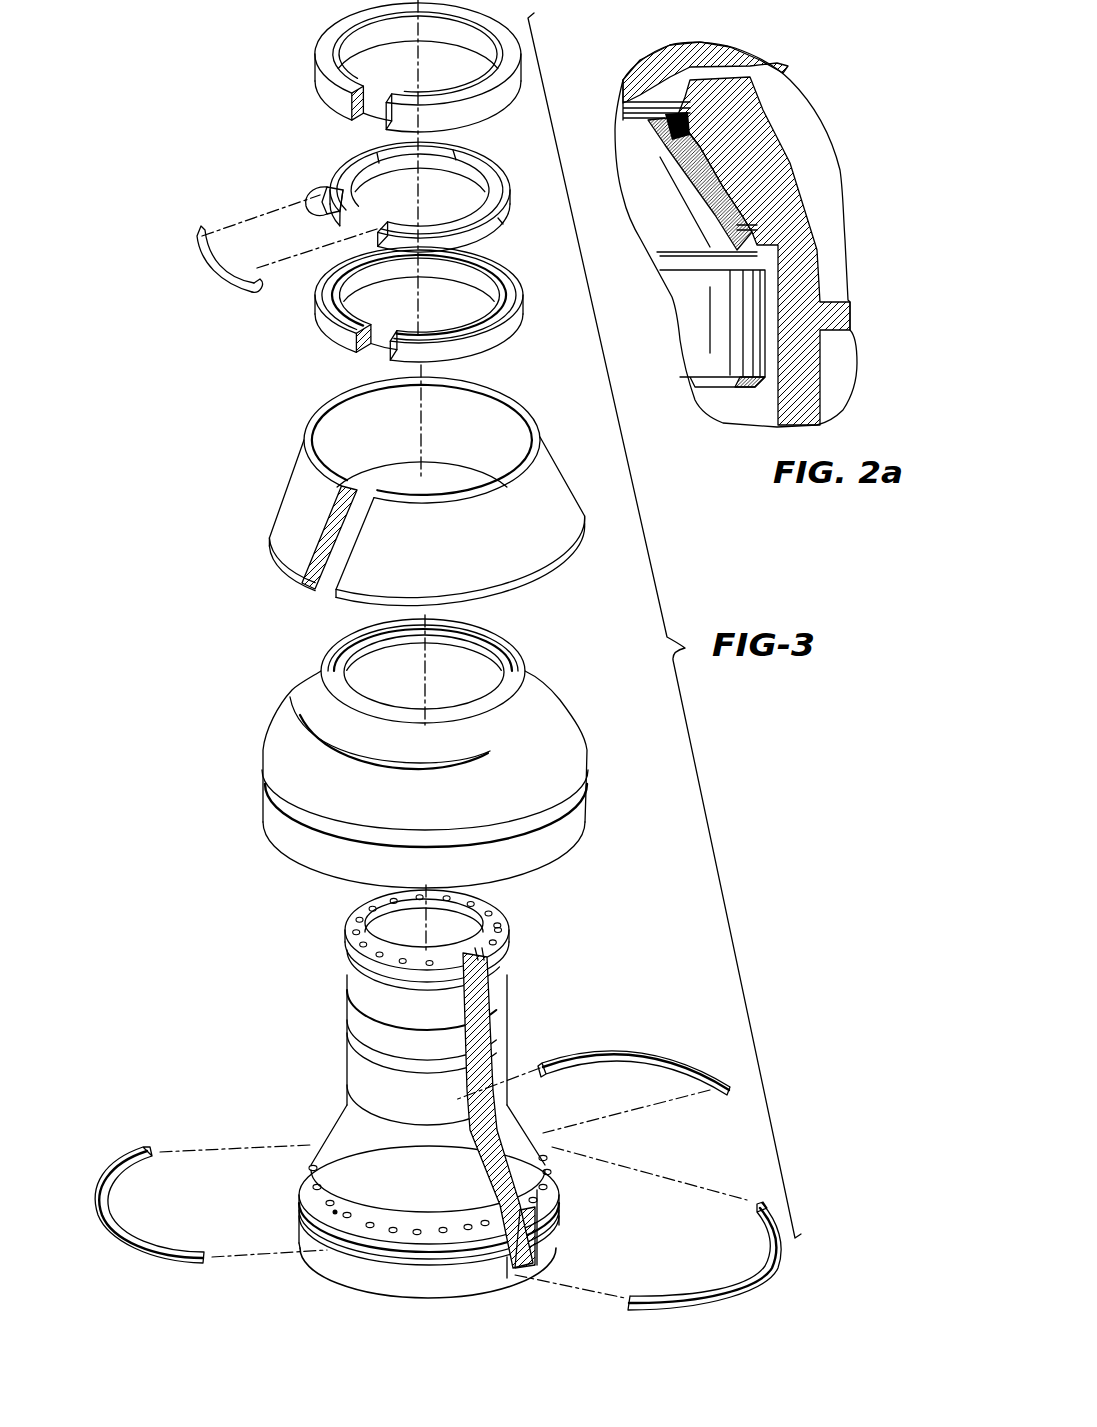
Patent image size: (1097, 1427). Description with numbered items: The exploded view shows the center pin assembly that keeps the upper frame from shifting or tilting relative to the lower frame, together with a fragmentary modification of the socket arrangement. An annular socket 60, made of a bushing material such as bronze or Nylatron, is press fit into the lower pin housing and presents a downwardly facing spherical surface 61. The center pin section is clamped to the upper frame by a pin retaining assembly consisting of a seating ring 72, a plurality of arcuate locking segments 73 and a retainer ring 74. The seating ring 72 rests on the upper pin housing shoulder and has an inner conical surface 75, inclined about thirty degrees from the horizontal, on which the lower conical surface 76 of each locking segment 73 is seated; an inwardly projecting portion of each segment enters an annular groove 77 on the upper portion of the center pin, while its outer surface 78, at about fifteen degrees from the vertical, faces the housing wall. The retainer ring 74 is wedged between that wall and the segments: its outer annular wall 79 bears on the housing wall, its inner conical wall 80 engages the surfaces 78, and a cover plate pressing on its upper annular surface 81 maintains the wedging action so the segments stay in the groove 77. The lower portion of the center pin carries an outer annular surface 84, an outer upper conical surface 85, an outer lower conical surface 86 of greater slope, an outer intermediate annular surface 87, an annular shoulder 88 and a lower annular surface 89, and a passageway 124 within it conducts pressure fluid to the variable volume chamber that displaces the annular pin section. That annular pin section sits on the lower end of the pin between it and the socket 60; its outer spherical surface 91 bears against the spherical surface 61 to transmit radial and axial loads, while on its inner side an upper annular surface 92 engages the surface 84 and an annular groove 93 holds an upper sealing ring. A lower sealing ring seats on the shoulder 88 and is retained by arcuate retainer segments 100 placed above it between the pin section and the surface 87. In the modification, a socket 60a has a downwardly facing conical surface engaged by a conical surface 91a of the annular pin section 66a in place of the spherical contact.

In FIG. 3, the retainer ring 74 is at (386, 71).
In FIG. 3, the outer annular wall 79 is at (323, 92).
In FIG. 3, the inner conical wall 80 is at (368, 99).
In FIG. 3, the upper annular surface 81 is at (484, 90).
In FIG. 3, the lower conical surface 76 is at (322, 196).
In FIG. 3, the arcuate locking segments 73 is at (264, 265).
In FIG. 3, the outer surface 78 is at (241, 288).
In FIG. 3, the seating ring 72 is at (441, 304).
In FIG. 3, the inner conical surface 75 is at (487, 275).
In FIG. 2a, the downwardly facing spherical surface 61 is at (676, 172).
In FIG. 3, the downwardly facing spherical surface 61 is at (507, 422).
In FIG. 3, the annular socket 60 is at (389, 491).
In FIG. 2a, the socket 60a is at (726, 199).
In FIG. 2a, the annular pin section 66a is at (700, 327).
In FIG. 3, the outer spherical surface 91 is at (448, 751).
In FIG. 2a, the conical surface 91a is at (655, 247).
In FIG. 3, the upper annular surface 92 is at (470, 646).
In FIG. 3, the annular groove 93 is at (360, 657).
In FIG. 3, the annular groove 77 is at (364, 998).
In FIG. 3, the outer annular surface 84 is at (343, 1082).
In FIG. 3, the outer upper conical surface 85 is at (345, 1116).
In FIG. 3, the outer lower conical surface 86 is at (393, 1202).
In FIG. 3, the passageway 124 is at (329, 1212).
In FIG. 3, the lower annular surface 89 is at (333, 1266).
In FIG. 3, the outer intermediate annular surface 87 is at (457, 1258).
In FIG. 3, the annular shoulder 88 is at (537, 1233).
In FIG. 3, the arcuate retainer segments 100 is at (660, 1033).